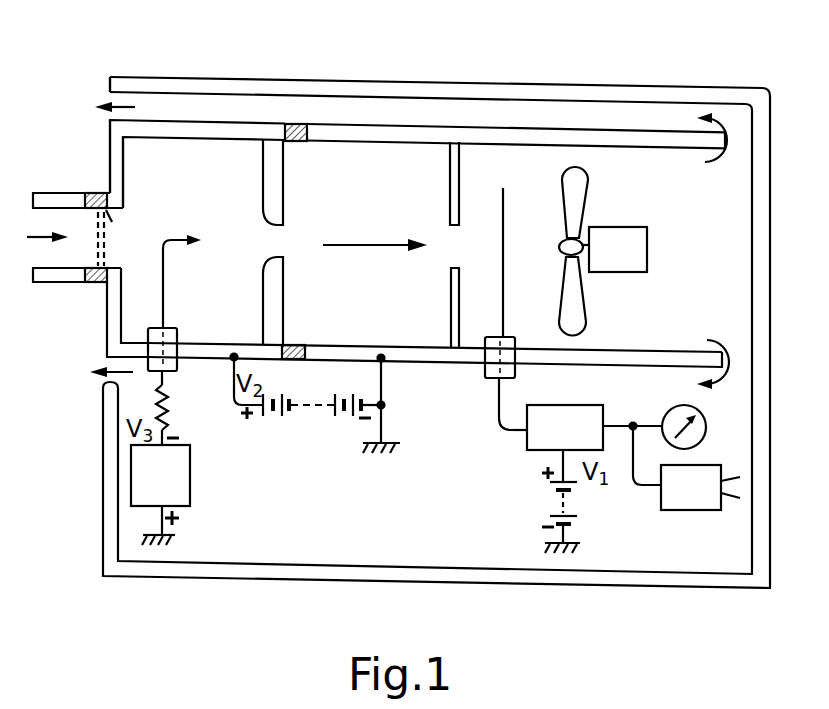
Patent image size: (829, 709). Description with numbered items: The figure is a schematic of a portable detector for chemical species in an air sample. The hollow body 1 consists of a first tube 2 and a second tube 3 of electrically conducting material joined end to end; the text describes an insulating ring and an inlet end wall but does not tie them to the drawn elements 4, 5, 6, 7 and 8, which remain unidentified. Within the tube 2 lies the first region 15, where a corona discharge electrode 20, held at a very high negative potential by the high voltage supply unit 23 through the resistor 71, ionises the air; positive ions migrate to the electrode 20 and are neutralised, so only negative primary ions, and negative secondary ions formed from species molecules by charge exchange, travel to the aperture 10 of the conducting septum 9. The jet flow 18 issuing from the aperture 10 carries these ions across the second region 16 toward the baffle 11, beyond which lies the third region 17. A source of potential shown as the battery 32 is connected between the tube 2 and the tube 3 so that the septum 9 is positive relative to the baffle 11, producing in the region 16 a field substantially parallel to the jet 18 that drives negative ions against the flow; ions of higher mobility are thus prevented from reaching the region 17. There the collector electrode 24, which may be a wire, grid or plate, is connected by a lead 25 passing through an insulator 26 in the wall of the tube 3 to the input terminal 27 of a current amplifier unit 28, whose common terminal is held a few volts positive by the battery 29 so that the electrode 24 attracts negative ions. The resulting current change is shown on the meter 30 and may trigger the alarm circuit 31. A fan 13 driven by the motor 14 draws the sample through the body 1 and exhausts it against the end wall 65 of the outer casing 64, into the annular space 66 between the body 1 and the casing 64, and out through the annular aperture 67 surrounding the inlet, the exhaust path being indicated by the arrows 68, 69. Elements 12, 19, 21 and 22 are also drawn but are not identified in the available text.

The hollow body 1 is at (370, 108).
The first tube 2 is at (212, 130).
The second tube 3 is at (595, 140).
The partition 4 is at (300, 124).
The tube wall 5 is at (113, 138).
The sealing block 6 is at (98, 200).
The inlet pipe 7 is at (53, 200).
The inlet pipe 8 is at (97, 284).
The septum 9 is at (273, 180).
The aperture 10 is at (280, 250).
The baffle 11 is at (450, 184).
The electrode plate 12 is at (453, 243).
The fan 13 is at (580, 188).
The motor 14 is at (640, 250).
The first region 15 is at (204, 176).
The second region 16 is at (380, 177).
The third region 17 is at (536, 179).
The jet flow 18 is at (360, 247).
The membrane 19 is at (100, 240).
The corona discharge electrode 20 is at (192, 244).
The probe lead 21 is at (164, 315).
The insulating bushing 22 is at (172, 362).
The high voltage supply unit 23 is at (175, 470).
The collector electrode 24 is at (505, 237).
The lead 25 is at (496, 417).
The insulator 26 is at (487, 372).
The input terminal 27 is at (525, 433).
The current amplifier unit 28 is at (580, 437).
The battery 29 is at (552, 503).
The meter 30 is at (668, 411).
The alarm circuit 31 is at (677, 500).
The battery 32 is at (308, 408).
The outer casing 64 is at (446, 92).
The end wall 65 is at (752, 527).
The annular space 66 is at (540, 83).
The annular aperture 67 is at (118, 96).
The arrows 68 is at (730, 118).
The arrows 69 is at (135, 105).
The resistor 71 is at (172, 411).